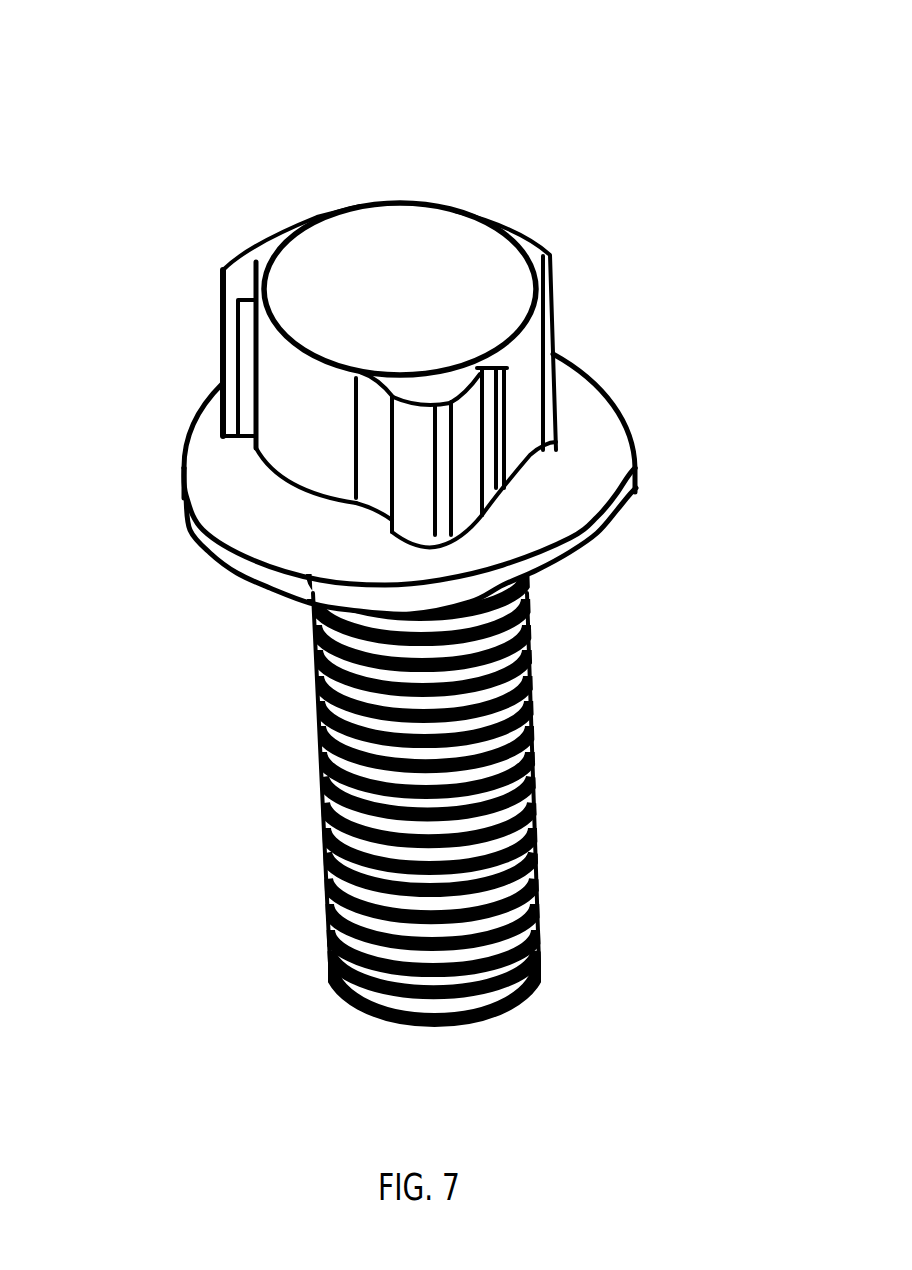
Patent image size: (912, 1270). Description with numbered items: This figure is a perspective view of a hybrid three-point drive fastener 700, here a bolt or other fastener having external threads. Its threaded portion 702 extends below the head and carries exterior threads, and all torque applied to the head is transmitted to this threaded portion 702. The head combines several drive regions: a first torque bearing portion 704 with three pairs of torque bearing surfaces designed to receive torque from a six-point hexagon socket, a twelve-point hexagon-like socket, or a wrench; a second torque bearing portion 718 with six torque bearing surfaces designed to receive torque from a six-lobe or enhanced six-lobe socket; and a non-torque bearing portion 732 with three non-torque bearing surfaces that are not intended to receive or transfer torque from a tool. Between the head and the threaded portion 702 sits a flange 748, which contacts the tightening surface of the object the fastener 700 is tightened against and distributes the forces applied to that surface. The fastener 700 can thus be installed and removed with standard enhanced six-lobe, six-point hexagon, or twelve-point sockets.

The fastener 700 is at (122, 80).
The threaded portion 702 is at (537, 805).
The first torque bearing portion 704 is at (460, 478).
The second torque bearing portion 718 is at (375, 468).
The non-torque bearing portion 732 is at (302, 425).
The flange 748 is at (215, 487).